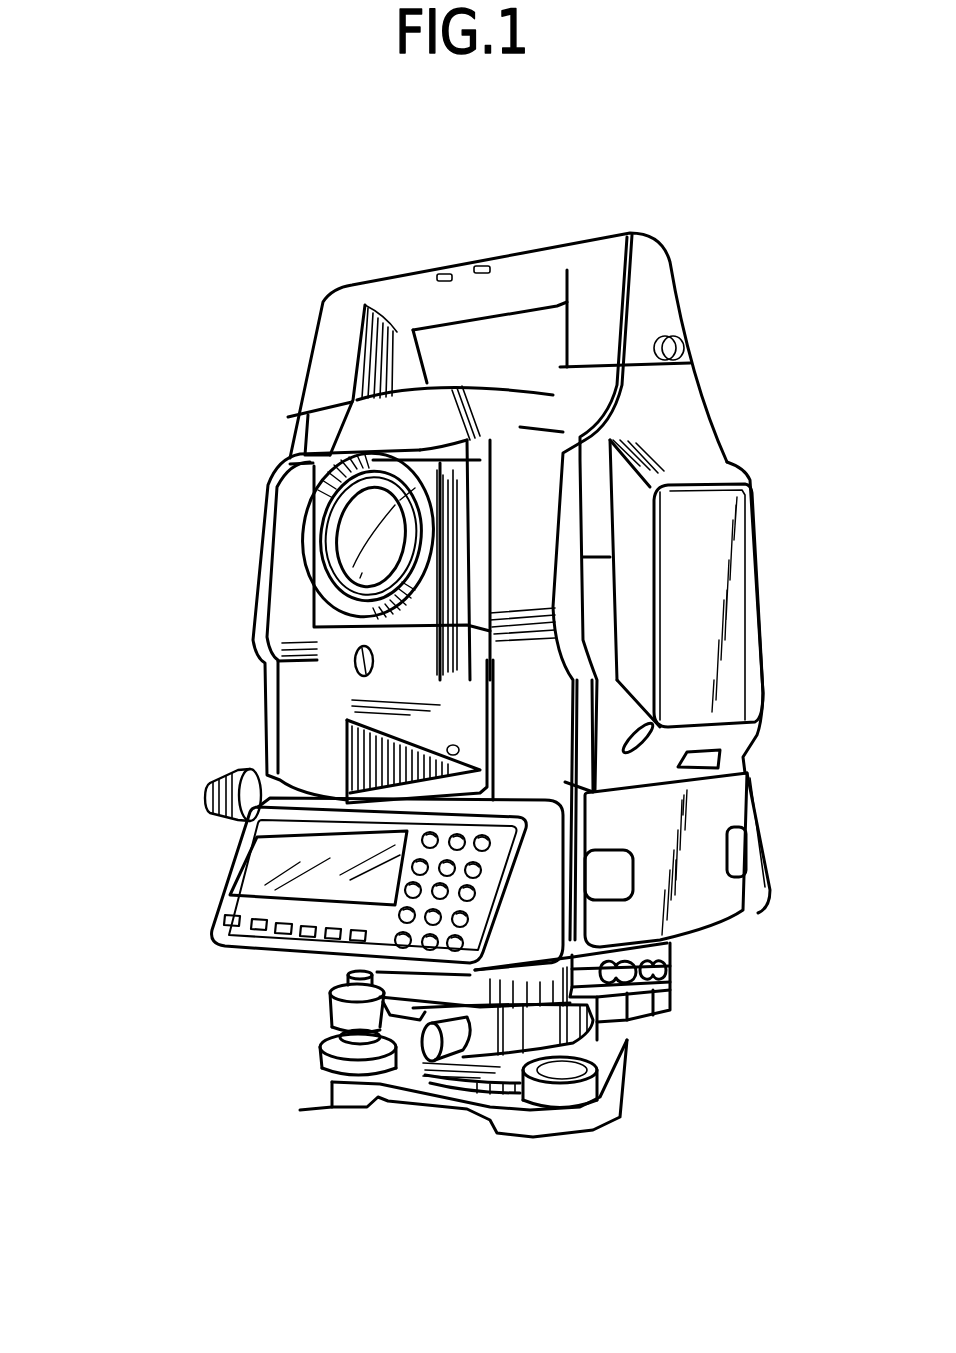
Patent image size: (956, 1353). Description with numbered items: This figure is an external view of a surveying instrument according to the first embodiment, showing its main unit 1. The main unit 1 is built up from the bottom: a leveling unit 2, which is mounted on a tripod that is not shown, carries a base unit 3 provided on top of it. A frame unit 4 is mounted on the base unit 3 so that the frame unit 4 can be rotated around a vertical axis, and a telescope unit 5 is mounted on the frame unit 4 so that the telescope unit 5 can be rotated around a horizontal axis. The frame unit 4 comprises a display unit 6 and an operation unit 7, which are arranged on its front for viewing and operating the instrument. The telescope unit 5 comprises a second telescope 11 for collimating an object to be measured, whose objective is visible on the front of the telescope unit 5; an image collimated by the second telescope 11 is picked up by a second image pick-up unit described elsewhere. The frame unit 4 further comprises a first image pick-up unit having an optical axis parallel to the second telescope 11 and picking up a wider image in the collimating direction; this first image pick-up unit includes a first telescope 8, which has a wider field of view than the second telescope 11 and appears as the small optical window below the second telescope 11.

The main unit 1 is at (80, 347).
The leveling unit 2 is at (327, 1103).
The base unit 3 is at (673, 997).
The frame unit 4 is at (750, 473).
The telescope unit 5 is at (368, 430).
The display unit 6 is at (387, 850).
The operation unit 7 is at (300, 942).
The first telescope 8 is at (356, 662).
The second telescope 11 is at (357, 537).